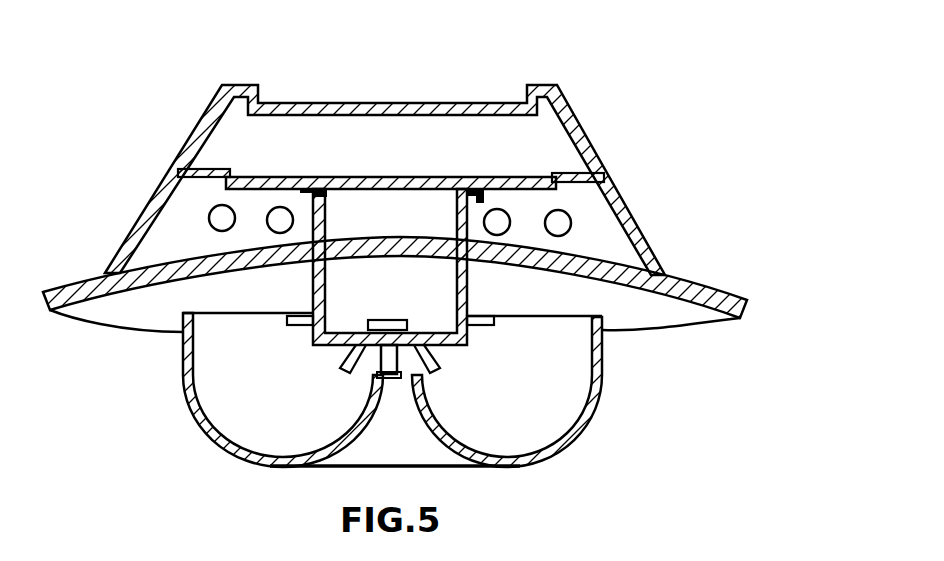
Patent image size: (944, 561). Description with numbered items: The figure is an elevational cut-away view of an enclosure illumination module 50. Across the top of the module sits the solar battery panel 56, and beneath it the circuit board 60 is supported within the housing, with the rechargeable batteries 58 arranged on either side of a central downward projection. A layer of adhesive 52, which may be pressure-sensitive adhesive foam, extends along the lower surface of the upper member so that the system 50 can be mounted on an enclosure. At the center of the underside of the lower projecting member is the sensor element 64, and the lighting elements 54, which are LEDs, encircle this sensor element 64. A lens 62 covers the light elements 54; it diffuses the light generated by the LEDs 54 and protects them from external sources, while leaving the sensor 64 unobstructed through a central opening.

The enclosure illumination module 50 is at (639, 134).
The layer of adhesive 52 is at (703, 284).
The lighting elements 54 is at (342, 358).
The solar battery panel 56 is at (474, 105).
The rechargeable batteries 58 is at (267, 213).
The circuit board 60 is at (533, 175).
The lens 62 is at (553, 453).
The sensor element 64 is at (386, 318).